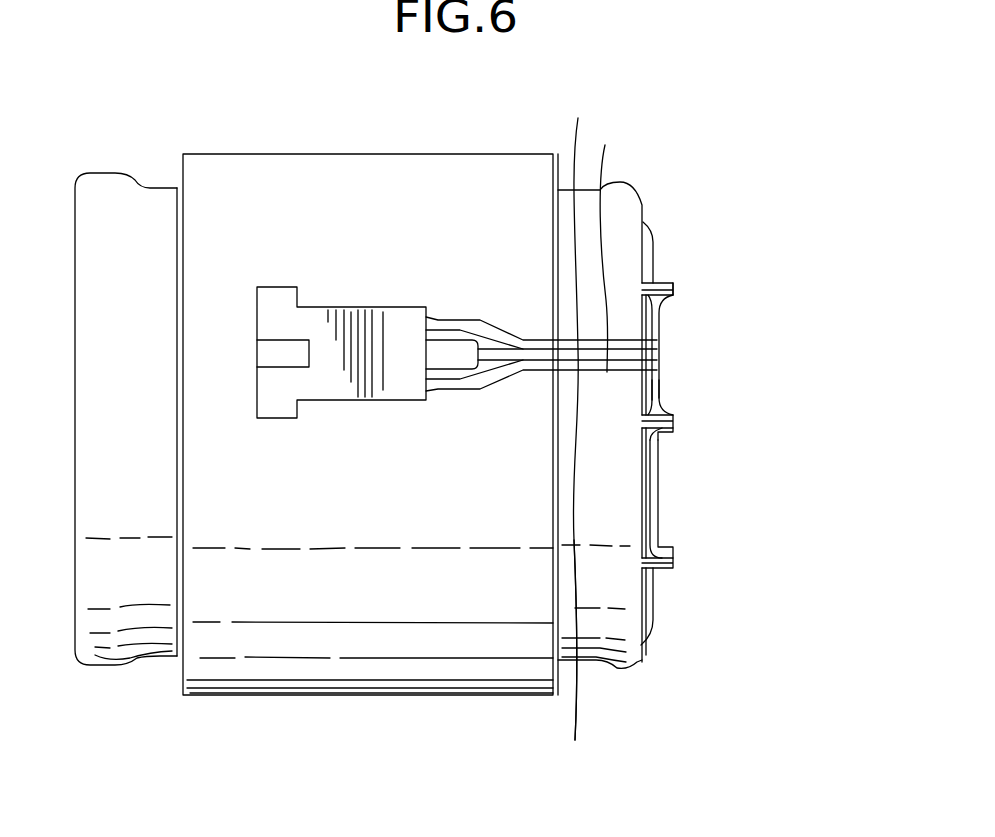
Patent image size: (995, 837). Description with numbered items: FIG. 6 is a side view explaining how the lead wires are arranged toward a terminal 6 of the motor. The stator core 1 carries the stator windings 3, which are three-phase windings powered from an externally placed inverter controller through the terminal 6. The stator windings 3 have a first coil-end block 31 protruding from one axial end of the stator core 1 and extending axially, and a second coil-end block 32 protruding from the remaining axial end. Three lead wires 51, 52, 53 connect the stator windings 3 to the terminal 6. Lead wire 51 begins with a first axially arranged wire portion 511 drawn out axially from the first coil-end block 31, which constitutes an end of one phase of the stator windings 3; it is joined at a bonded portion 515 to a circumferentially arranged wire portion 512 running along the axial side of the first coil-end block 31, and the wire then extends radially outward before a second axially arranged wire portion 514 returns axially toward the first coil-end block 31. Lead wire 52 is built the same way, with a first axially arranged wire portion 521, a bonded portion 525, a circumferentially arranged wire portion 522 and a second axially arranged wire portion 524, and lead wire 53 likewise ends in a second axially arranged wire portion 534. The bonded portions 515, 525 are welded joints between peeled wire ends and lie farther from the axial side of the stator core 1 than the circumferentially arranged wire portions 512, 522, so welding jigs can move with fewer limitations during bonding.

The stator core 1 is at (456, 680).
The stator windings 3 is at (650, 459).
The first coil-end block 31 is at (633, 670).
The second coil-end block 32 is at (98, 648).
The terminal 6 is at (386, 343).
The second axially arranged wire portion 514 is at (583, 416).
The second axially arranged wire portion 524 is at (619, 247).
The second axially arranged wire portion 534 is at (573, 657).
The lead wire 51 is at (717, 355).
The first axially arranged wire portion 511 is at (670, 282).
The circumferentially arranged wire portion 512 is at (657, 333).
The bonded portion 515 is at (680, 293).
The lead wire 52 is at (749, 391).
The first axially arranged wire portion 521 is at (670, 427).
The circumferentially arranged wire portion 522 is at (655, 388).
The bonded portion 525 is at (680, 420).
The lead wire 53 is at (662, 480).